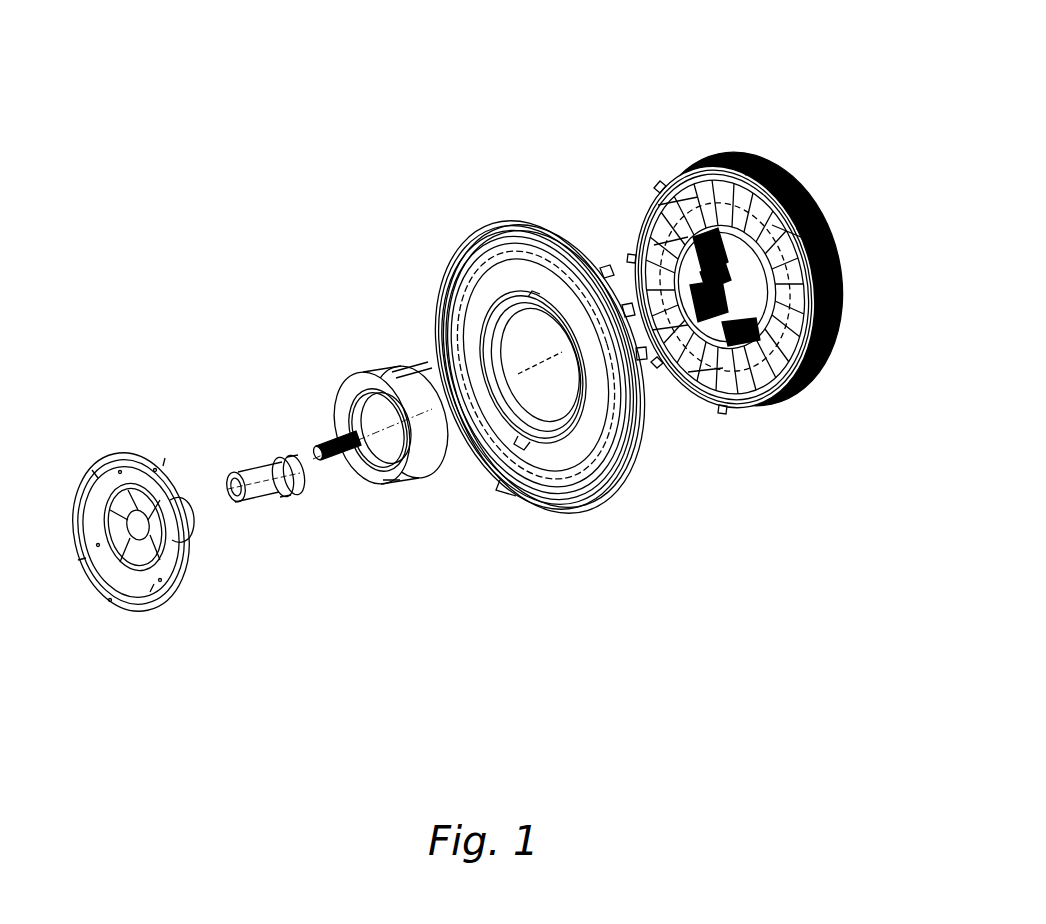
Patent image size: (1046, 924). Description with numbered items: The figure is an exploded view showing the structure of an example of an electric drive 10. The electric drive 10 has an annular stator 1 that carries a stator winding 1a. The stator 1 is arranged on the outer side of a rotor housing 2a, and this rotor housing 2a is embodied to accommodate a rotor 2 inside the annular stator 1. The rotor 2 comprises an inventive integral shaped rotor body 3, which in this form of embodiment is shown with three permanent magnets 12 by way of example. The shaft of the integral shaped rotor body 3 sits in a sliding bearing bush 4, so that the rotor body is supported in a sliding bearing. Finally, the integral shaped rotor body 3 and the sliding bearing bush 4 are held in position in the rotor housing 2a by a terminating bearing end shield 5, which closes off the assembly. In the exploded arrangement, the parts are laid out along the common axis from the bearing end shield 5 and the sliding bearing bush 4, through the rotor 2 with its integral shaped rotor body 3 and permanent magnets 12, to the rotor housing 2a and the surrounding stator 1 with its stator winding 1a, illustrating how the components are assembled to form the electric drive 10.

The electric drive 10 is at (310, 116).
The stator 1 is at (756, 160).
The stator winding 1a is at (724, 287).
The rotor housing 2a is at (512, 232).
The rotor 2 is at (398, 517).
The permanent magnets 12 is at (389, 369).
The integral shaped rotor body 3 is at (356, 422).
The sliding bearing bush 4 is at (251, 466).
The bearing end shield 5 is at (108, 456).